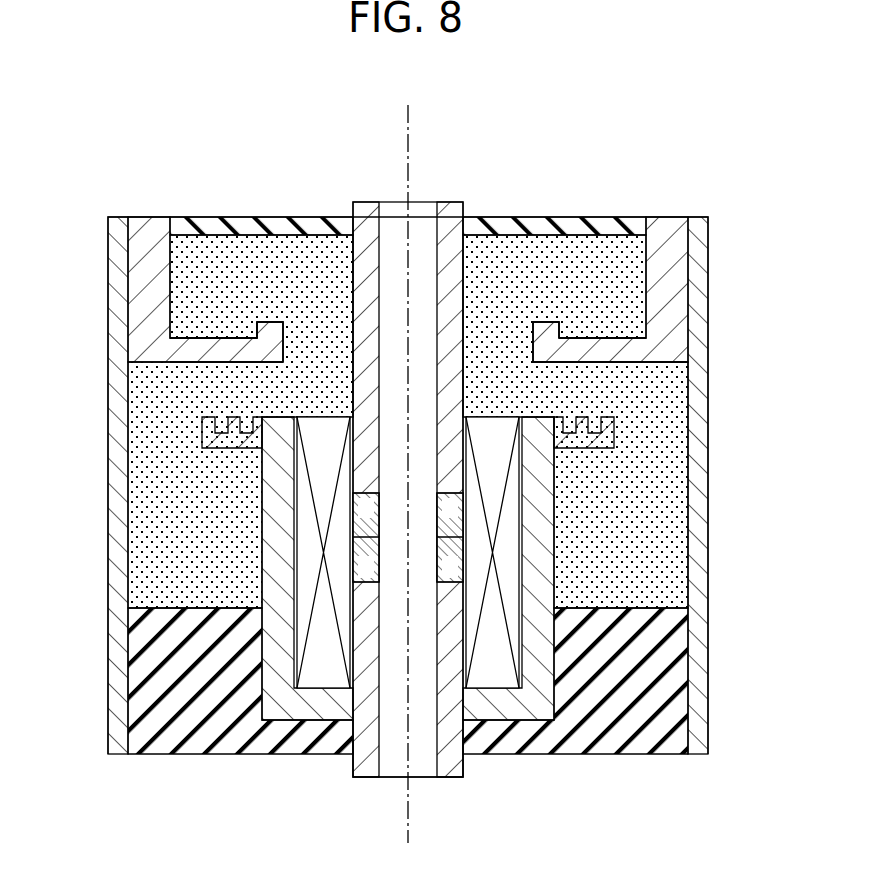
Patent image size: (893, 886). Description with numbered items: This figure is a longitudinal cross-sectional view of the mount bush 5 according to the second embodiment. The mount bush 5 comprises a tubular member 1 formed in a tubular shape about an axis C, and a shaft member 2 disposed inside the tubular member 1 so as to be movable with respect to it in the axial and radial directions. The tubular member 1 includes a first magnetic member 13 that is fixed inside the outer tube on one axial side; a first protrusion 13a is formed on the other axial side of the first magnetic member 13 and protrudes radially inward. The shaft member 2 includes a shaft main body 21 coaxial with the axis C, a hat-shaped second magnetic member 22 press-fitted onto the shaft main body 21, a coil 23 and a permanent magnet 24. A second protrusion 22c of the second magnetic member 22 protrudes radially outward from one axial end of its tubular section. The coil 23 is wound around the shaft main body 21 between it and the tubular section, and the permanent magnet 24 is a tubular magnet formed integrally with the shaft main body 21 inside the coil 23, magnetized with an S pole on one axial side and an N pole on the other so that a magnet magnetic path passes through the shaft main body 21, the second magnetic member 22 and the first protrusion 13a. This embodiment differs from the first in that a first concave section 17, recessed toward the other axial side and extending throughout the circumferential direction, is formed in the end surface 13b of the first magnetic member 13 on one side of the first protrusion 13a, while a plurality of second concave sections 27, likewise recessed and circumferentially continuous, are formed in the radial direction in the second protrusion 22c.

The tubular member 1 is at (703, 214).
The shaft member 2 is at (452, 202).
The mount bush 5 is at (645, 170).
The first magnetic member 13 is at (150, 217).
The first protrusion 13a is at (598, 356).
The end surface 13b is at (275, 322).
The first concave section 17 is at (257, 330).
The shaft main body 21 is at (450, 770).
The second magnetic member 22 is at (558, 541).
The second protrusion 22c is at (588, 447).
The coil 23 is at (313, 676).
The permanent magnet 24 is at (353, 540).
The second concave section 27 is at (612, 420).
The axis C is at (410, 125).